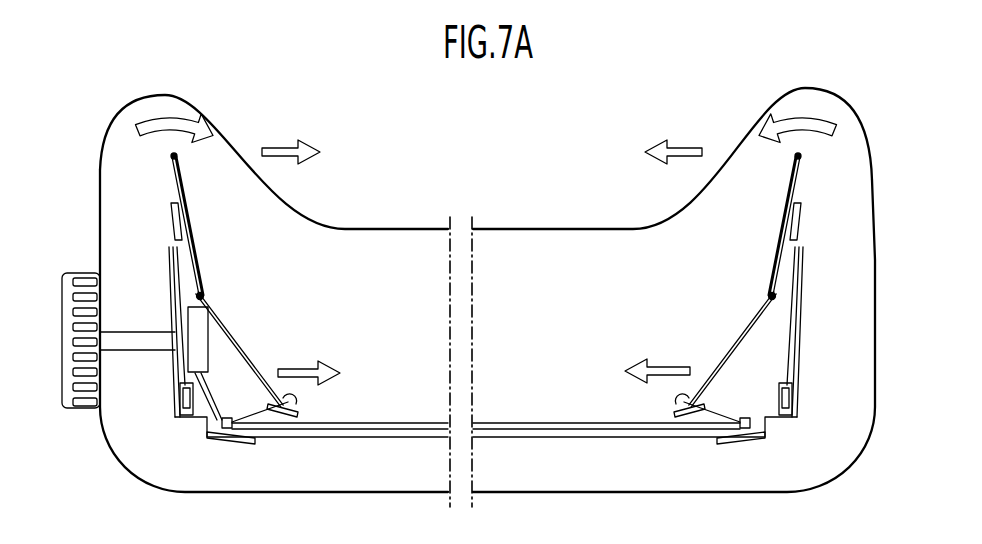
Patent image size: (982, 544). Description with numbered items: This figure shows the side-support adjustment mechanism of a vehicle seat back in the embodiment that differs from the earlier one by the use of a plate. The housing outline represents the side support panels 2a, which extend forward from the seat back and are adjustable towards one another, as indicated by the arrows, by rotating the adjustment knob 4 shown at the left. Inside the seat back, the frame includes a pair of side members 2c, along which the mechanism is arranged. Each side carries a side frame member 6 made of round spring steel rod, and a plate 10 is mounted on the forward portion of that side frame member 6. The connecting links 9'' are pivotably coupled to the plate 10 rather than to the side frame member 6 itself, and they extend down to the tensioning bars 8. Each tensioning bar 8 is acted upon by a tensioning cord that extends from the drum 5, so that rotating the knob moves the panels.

The side support panel 2a is at (170, 93).
The side frame member 6 is at (172, 180).
The plate 10 is at (183, 210).
The side member 2c is at (172, 280).
The drum 5 is at (199, 346).
The connecting link 9'' is at (486, 347).
The tensioning bar 8 is at (268, 408).
The adjustment knob 4 is at (67, 411).